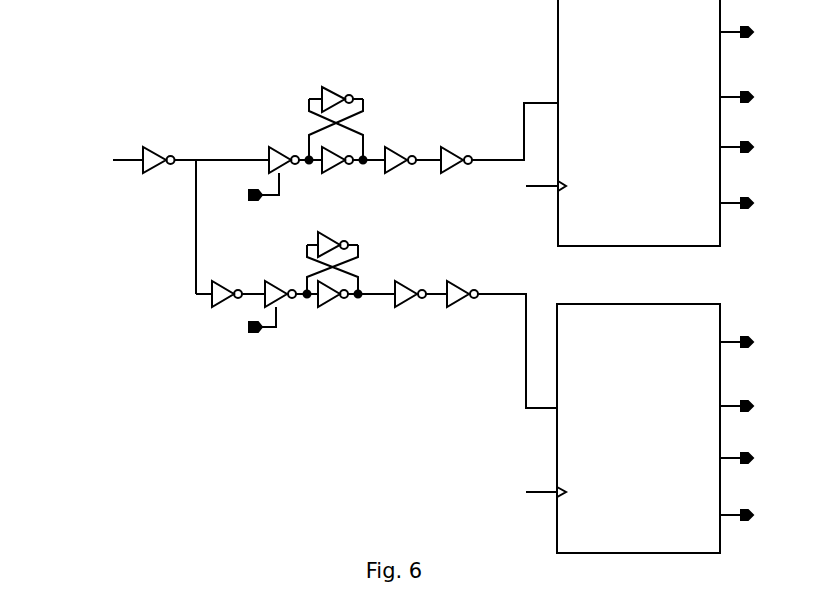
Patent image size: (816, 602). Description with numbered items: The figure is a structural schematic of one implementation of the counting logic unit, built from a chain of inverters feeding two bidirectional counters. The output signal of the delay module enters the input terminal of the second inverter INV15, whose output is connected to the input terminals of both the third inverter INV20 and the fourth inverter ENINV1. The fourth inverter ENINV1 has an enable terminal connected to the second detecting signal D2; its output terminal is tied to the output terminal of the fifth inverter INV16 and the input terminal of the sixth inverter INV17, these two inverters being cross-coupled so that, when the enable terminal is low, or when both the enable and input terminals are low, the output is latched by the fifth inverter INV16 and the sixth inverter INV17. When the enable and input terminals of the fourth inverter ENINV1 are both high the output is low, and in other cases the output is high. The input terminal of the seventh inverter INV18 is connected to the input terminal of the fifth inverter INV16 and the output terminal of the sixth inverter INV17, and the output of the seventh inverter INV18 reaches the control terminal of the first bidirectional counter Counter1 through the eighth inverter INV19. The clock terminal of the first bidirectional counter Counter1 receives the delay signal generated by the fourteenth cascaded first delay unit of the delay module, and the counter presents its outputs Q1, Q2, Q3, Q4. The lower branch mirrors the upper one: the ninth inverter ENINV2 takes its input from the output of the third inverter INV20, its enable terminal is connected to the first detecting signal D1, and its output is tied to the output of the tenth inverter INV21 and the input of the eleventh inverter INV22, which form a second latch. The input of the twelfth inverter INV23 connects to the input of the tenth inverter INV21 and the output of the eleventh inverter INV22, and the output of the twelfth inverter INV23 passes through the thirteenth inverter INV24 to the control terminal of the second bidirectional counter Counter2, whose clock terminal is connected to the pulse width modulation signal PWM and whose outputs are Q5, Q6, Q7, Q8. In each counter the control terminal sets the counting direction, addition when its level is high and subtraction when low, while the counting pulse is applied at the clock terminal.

The second inverter INV15 is at (156, 149).
The fourth inverter ENINV1 is at (263, 149).
The fifth inverter INV16 is at (336, 113).
The sixth inverter INV17 is at (335, 171).
The seventh inverter INV18 is at (400, 152).
The eighth inverter INV19 is at (455, 152).
The first bidirectional counter Counter1 is at (639, 123).
The third inverter INV20 is at (200, 298).
The ninth inverter ENINV2 is at (263, 285).
The tenth inverter INV21 is at (332, 253).
The eleventh inverter INV22 is at (334, 304).
The twelfth inverter INV23 is at (405, 286).
The thirteenth inverter INV24 is at (464, 286).
The second bidirectional counter Counter2 is at (638, 428).
The second detecting signal D2 is at (253, 188).
The first detecting signal D1 is at (250, 321).
The pulse width modulation signal PWM is at (524, 492).
The counter output Q1 is at (719, 32).
The counter output Q2 is at (719, 97).
The counter output Q3 is at (719, 147).
The counter output Q4 is at (719, 203).
The counter output Q5 is at (719, 342).
The counter output Q6 is at (719, 406).
The counter output Q7 is at (719, 458).
The counter output Q8 is at (719, 515).